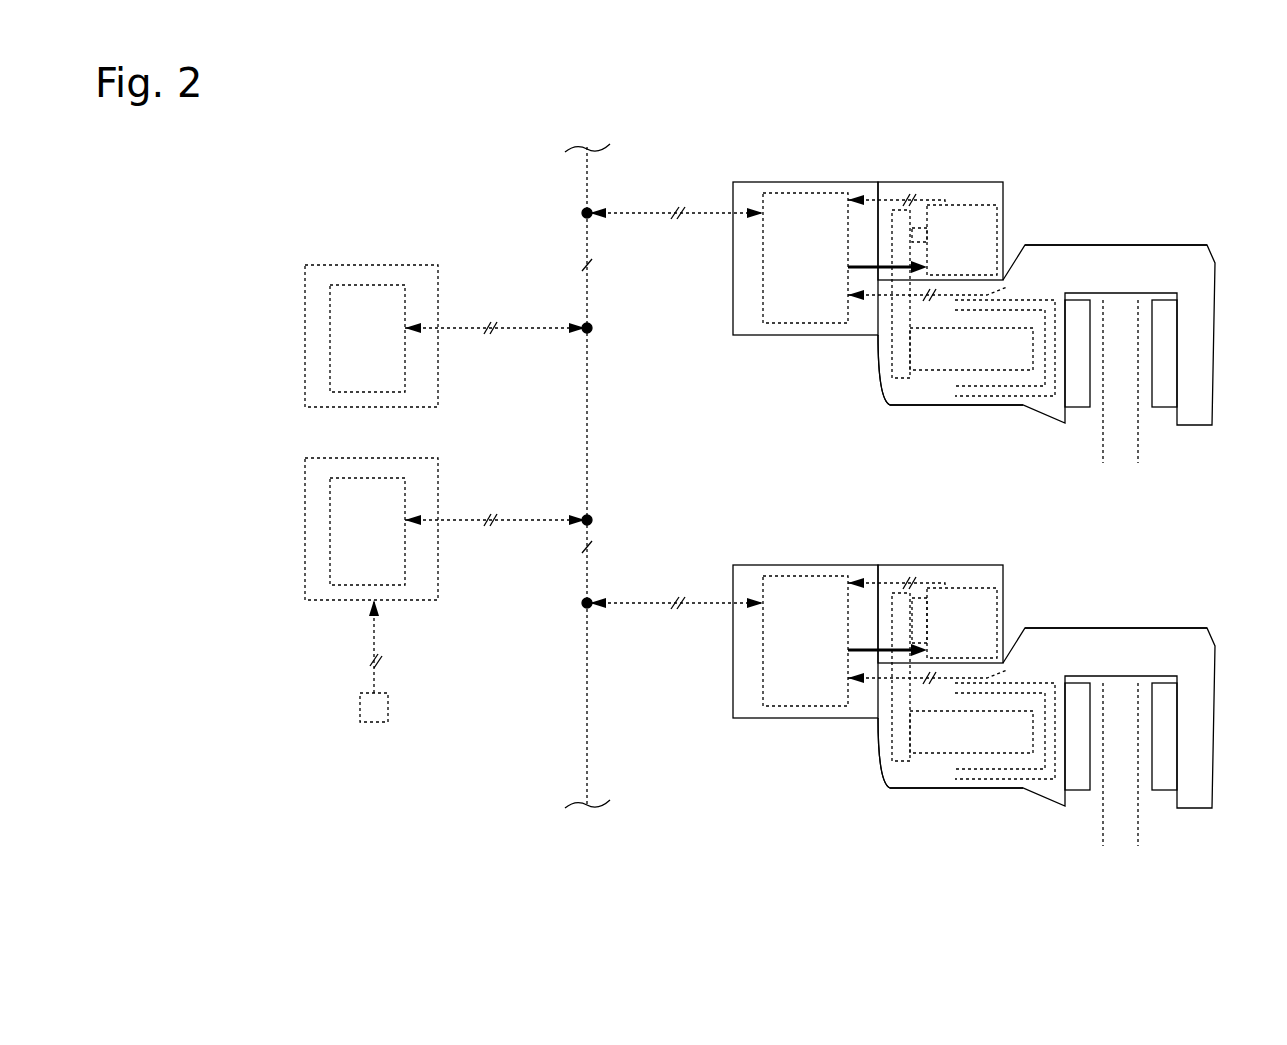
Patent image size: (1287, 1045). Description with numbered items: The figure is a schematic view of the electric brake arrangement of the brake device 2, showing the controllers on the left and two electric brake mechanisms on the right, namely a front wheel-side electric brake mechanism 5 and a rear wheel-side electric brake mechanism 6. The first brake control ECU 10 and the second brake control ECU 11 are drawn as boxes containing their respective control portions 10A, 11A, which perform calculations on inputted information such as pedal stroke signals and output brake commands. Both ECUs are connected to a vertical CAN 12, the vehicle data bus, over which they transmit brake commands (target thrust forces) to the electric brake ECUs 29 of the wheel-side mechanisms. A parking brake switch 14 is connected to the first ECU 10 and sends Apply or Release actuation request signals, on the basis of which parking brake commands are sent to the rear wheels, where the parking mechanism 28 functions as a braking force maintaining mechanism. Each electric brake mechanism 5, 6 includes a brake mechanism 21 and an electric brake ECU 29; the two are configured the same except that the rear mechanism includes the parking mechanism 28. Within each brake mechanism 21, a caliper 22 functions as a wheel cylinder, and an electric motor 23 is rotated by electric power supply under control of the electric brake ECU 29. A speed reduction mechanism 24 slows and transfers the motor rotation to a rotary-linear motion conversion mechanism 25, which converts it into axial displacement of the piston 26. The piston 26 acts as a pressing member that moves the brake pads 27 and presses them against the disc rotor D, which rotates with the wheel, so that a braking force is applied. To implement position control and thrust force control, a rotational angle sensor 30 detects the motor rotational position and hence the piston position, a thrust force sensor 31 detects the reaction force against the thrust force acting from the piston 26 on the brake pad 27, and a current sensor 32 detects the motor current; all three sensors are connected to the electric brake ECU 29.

The brake device 2 is at (1222, 190).
The front wheel-side electric brake mechanism 5 is at (1066, 232).
The rear wheel-side electric brake mechanism 6 is at (1092, 620).
The first brake control ECU 10 is at (305, 578).
The control portion 10A is at (330, 532).
The second brake control ECU 11 is at (345, 265).
The control portion 11A is at (330, 335).
The CAN 12 is at (590, 458).
The parking brake switch 14 is at (360, 712).
The brake mechanism 21 is at (1185, 268).
The caliper 22 is at (1125, 270).
The electric motor 23 is at (975, 203).
The speed reduction mechanism 24 is at (888, 338).
The rotary-linear motion conversion mechanism 25 is at (938, 370).
The piston 26 is at (990, 405).
The brake pad 27 is at (1077, 393).
The parking mechanism 28 is at (918, 597).
The electric brake ECU 29 is at (800, 218).
The rotational angle sensor 30 is at (942, 200).
The thrust force sensor 31 is at (1003, 290).
The current sensor 32 is at (850, 268).
The disc rotor D is at (1147, 470).